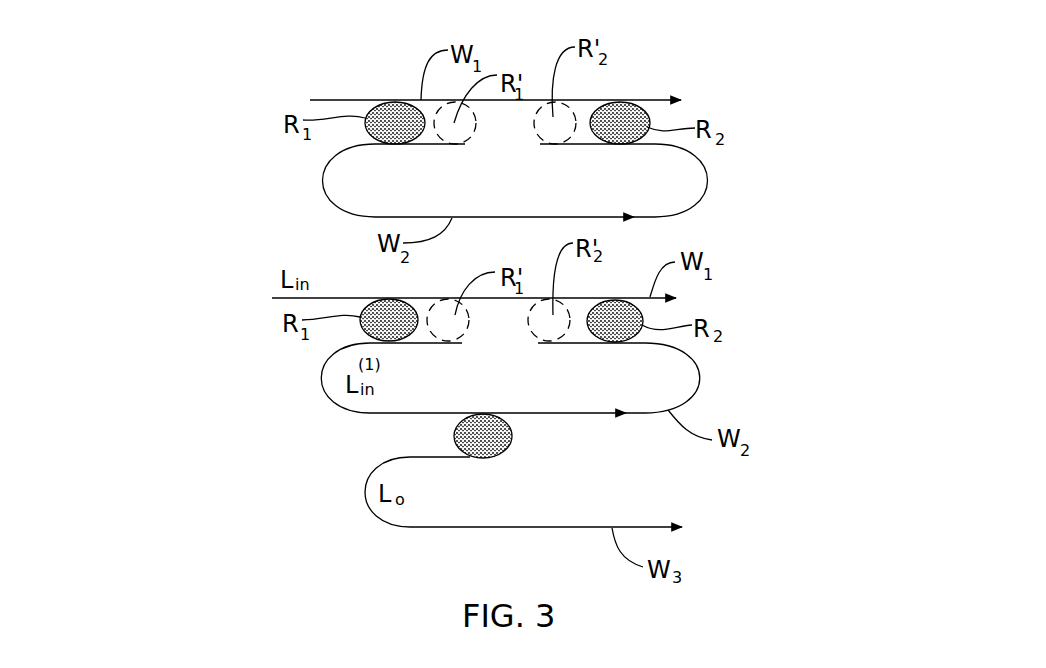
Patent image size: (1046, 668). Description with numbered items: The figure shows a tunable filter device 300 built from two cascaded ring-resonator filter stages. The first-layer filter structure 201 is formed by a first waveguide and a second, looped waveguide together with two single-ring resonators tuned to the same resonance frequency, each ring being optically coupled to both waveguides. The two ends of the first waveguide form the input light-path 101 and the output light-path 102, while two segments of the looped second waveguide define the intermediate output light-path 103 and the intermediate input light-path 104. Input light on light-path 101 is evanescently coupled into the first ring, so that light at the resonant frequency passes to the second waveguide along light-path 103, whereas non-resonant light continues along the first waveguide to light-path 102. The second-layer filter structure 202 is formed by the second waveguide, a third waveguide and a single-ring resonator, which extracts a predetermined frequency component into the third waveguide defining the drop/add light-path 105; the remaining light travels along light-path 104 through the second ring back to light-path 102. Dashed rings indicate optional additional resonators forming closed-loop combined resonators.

The input light-path 101 is at (361, 193).
The output light-path 102 is at (618, 197).
The intermediate output light-path 103 is at (477, 278).
The intermediate input light-path 104 is at (623, 278).
The drop/add light-path 105 is at (523, 494).
The filter structure 201 is at (609, 75).
The second-layer filter structure 202 is at (323, 498).
The tunable filter device 300 is at (273, 266).